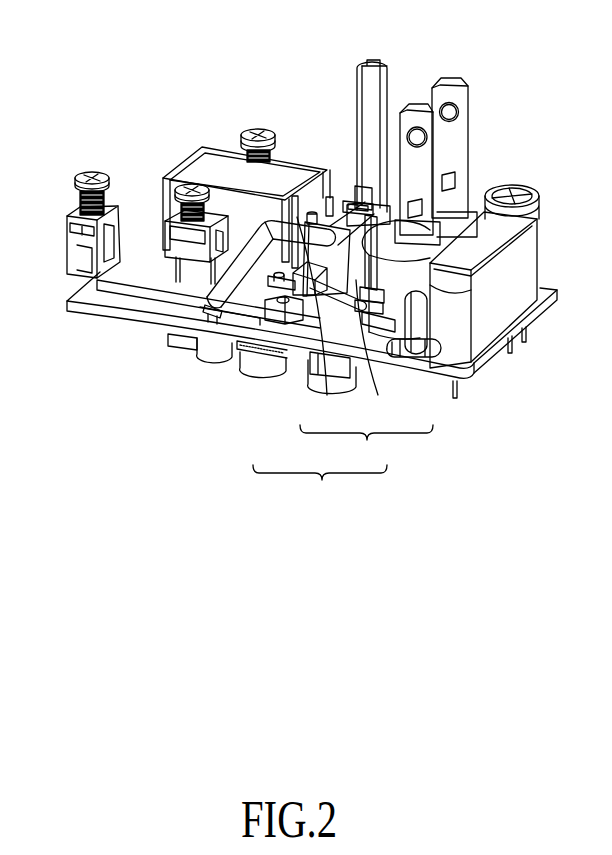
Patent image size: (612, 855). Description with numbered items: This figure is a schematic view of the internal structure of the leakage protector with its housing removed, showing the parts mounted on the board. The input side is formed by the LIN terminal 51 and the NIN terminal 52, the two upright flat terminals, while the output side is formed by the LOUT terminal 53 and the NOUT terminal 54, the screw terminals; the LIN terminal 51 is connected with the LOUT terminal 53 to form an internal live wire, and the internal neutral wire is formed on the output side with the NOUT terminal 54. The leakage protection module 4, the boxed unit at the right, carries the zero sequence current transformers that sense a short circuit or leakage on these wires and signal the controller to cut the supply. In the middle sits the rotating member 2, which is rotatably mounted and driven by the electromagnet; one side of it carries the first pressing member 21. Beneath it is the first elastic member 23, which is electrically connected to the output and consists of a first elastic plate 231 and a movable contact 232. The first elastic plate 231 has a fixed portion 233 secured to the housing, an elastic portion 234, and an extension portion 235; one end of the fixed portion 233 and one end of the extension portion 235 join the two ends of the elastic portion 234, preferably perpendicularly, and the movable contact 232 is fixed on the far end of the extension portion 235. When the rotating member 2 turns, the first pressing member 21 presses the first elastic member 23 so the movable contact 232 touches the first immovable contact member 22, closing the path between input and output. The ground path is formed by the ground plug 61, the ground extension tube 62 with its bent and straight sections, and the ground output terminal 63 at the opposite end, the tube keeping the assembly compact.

The rotating member 2 is at (348, 198).
The first pressing member 21 is at (306, 204).
The first immovable contact member 22 is at (258, 364).
The first elastic member 23 is at (320, 487).
The first elastic plate 231 is at (366, 448).
The movable contact 232 is at (330, 240).
The fixed portion 233 is at (380, 352).
The elastic portion 234 is at (364, 378).
The extension portion 235 is at (331, 372).
The leakage protection module 4 is at (432, 288).
The LIN terminal 51 is at (453, 150).
The NIN terminal 52 is at (414, 178).
The LOUT terminal 53 is at (258, 128).
The NOUT terminal 54 is at (192, 183).
The ground plug 61 is at (372, 112).
The ground extension tube 62 is at (201, 298).
The ground output terminal 63 is at (72, 214).